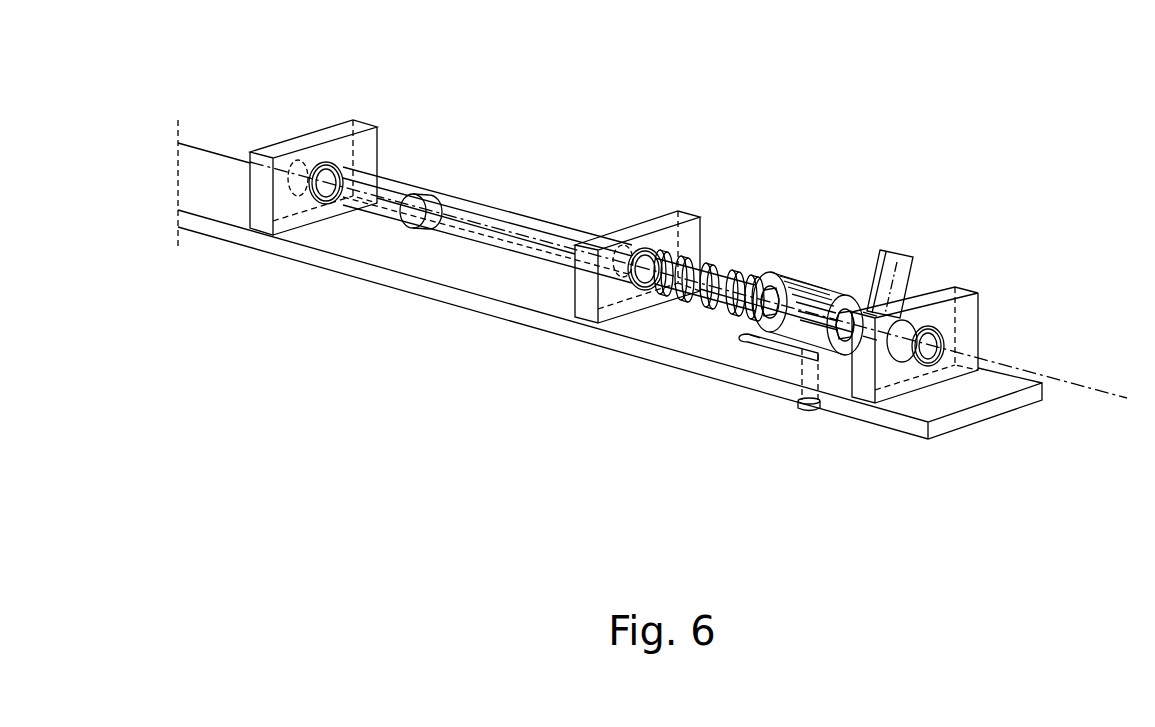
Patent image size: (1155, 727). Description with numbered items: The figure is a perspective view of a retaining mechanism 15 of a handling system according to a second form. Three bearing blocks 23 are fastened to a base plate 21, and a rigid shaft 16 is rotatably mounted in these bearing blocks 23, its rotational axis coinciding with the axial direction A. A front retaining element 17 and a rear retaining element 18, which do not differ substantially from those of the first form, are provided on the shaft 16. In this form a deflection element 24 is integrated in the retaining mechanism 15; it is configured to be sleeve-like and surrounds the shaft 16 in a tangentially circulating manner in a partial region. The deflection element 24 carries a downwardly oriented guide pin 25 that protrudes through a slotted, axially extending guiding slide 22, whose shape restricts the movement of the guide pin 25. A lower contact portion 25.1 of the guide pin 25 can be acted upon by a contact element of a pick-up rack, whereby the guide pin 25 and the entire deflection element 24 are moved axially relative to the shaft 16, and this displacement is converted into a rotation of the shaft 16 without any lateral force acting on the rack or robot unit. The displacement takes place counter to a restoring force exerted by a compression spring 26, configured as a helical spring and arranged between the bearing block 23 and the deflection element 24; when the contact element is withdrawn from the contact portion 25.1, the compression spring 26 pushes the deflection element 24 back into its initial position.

The retaining mechanism 15 is at (790, 138).
The rigid shaft 16 is at (513, 252).
The front retaining element 17 is at (894, 253).
The rear retaining element 18 is at (451, 191).
The base plate 21 is at (302, 250).
The guiding slide 22 is at (772, 348).
The bearing block 23 is at (332, 134).
The deflection element 24 is at (807, 278).
The guide pin 25 is at (808, 352).
The lower contact portion 25.1 is at (807, 415).
The compression spring 26 is at (712, 257).
The axial direction A is at (1072, 383).